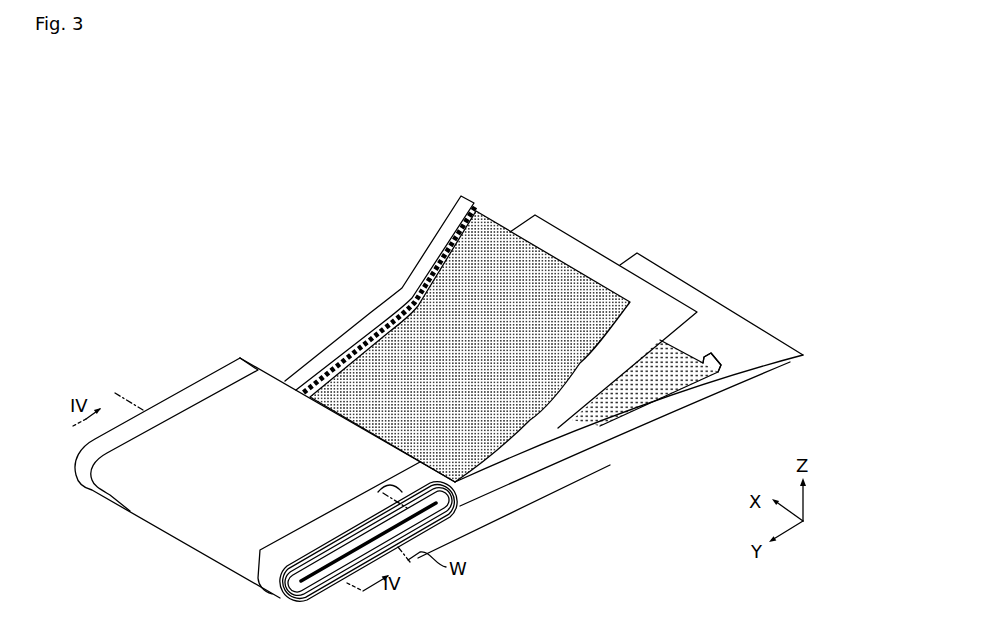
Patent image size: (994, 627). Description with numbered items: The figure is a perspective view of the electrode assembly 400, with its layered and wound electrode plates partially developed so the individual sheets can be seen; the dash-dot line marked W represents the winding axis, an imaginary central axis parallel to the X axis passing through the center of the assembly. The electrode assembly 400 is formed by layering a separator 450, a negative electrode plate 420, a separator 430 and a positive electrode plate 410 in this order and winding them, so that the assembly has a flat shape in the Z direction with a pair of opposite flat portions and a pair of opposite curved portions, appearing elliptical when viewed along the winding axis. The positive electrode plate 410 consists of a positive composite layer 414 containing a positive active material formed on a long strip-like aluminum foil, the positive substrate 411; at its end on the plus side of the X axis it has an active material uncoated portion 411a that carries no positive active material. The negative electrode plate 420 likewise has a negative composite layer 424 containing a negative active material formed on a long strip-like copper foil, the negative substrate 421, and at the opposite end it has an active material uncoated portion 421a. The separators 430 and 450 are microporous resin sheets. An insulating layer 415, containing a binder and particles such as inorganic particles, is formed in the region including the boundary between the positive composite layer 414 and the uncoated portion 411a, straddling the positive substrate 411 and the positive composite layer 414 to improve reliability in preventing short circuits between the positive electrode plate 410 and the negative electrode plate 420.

The electrode assembly 400 is at (738, 110).
The positive electrode plate 410 is at (375, 203).
The positive substrate 411 is at (415, 306).
The active material uncoated portion 411a is at (182, 397).
The positive composite layer 414 is at (411, 299).
The insulating layer 415 is at (377, 329).
The negative electrode plate 420 is at (721, 456).
The negative substrate 421 is at (636, 408).
The active material uncoated portion 421a is at (446, 510).
The negative composite layer 424 is at (603, 394).
The separator 430 is at (558, 237).
The separator 450 is at (192, 528).